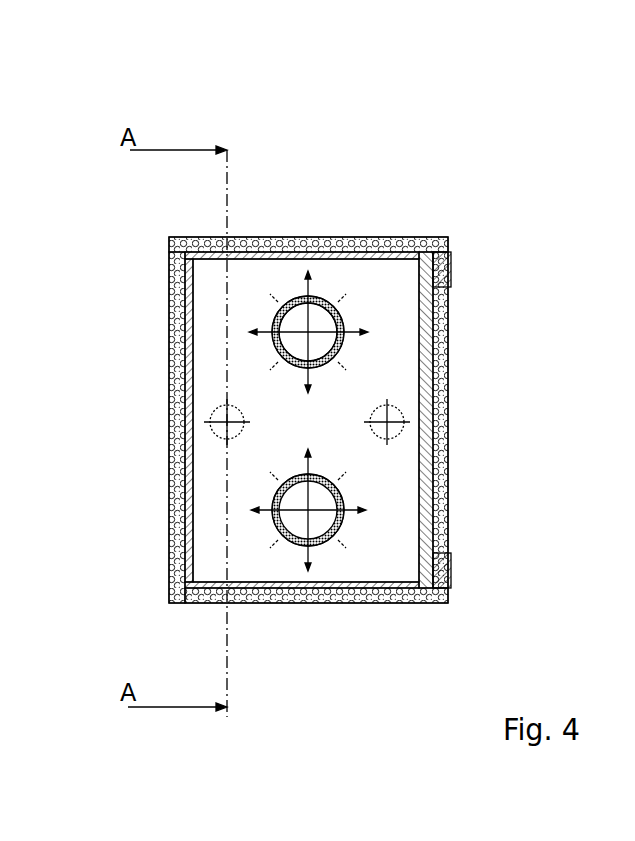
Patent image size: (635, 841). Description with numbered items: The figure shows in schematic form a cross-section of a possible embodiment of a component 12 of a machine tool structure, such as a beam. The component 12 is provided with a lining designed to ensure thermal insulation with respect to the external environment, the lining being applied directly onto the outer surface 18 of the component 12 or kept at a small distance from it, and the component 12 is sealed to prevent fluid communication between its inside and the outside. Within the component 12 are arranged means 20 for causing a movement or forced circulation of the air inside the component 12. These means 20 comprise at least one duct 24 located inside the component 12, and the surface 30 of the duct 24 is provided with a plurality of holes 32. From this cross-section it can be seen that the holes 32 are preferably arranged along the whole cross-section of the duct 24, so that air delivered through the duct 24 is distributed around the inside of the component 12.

The component 12 is at (392, 204).
The outer surface 18 is at (433, 322).
The means for forced circulation of air 20 is at (285, 275).
The duct 24 is at (343, 346).
The surface of the duct 30 is at (273, 312).
The holes 32 is at (413, 235).